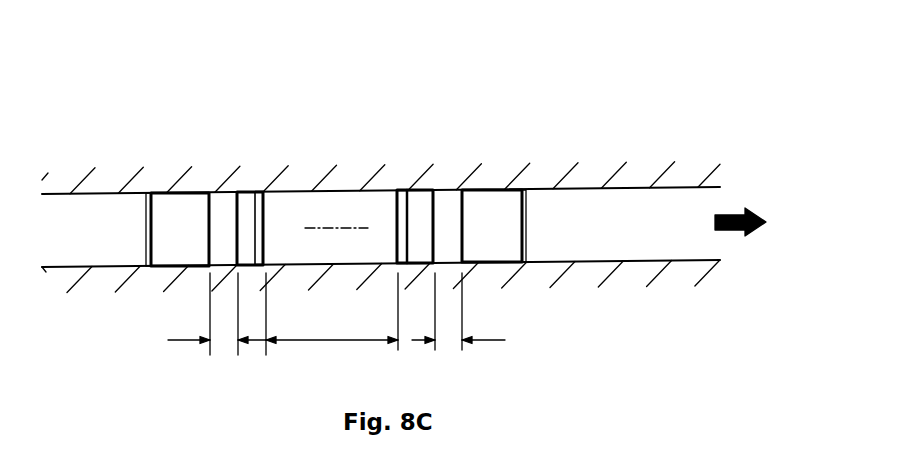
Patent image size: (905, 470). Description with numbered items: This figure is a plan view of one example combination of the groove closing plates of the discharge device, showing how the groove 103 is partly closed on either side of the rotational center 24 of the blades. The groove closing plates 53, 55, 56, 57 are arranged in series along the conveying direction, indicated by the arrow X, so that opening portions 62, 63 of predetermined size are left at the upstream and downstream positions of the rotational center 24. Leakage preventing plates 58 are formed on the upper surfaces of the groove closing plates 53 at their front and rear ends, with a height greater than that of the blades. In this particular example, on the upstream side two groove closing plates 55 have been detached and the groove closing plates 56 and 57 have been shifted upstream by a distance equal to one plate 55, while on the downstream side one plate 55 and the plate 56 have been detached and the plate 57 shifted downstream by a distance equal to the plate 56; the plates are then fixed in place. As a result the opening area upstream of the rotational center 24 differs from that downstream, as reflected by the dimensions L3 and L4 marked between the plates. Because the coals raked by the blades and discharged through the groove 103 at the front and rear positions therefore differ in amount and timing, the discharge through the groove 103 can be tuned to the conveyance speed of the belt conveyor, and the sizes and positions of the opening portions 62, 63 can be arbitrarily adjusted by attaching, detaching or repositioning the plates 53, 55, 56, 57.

The groove 103 is at (657, 226).
The groove closing plate 53 is at (168, 210).
The leakage preventing plate 58 is at (147, 228).
The groove closing plate 56 is at (252, 208).
The groove closing plate 57 is at (267, 208).
The opening portion 62 is at (229, 208).
The opening portion 63 is at (377, 203).
The groove closing plate 55 is at (427, 203).
The rotational center 24 is at (336, 255).
The direction X is at (733, 232).
The length L3 is at (337, 314).
The length L4 is at (332, 314).